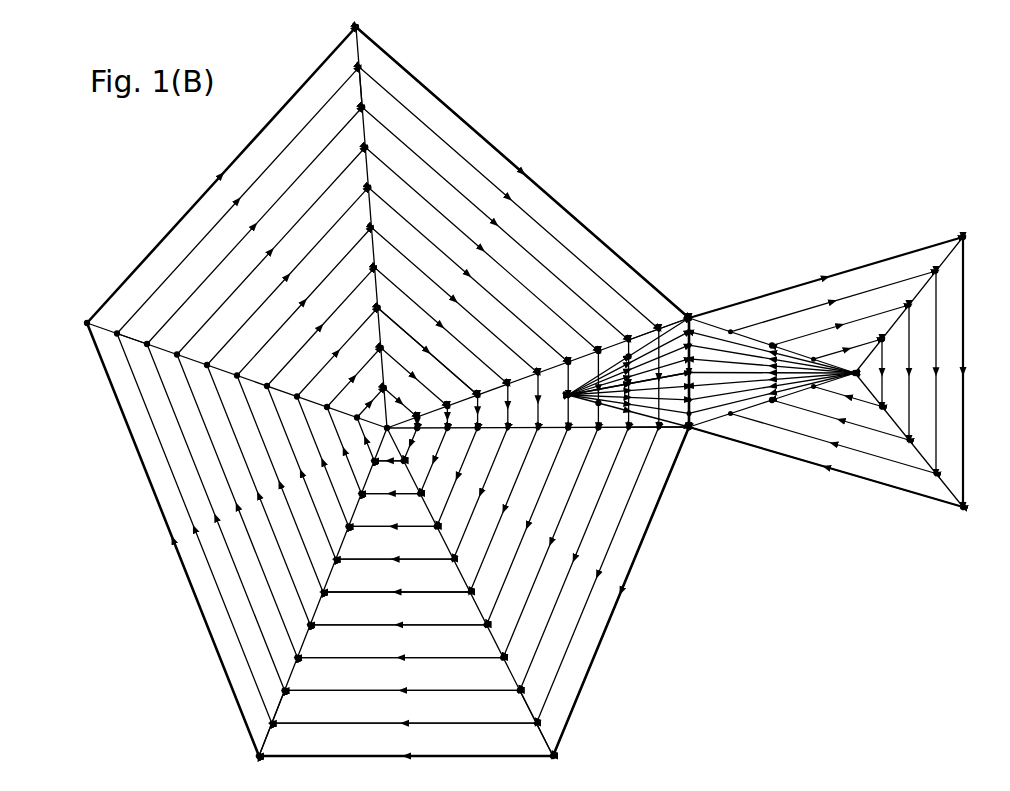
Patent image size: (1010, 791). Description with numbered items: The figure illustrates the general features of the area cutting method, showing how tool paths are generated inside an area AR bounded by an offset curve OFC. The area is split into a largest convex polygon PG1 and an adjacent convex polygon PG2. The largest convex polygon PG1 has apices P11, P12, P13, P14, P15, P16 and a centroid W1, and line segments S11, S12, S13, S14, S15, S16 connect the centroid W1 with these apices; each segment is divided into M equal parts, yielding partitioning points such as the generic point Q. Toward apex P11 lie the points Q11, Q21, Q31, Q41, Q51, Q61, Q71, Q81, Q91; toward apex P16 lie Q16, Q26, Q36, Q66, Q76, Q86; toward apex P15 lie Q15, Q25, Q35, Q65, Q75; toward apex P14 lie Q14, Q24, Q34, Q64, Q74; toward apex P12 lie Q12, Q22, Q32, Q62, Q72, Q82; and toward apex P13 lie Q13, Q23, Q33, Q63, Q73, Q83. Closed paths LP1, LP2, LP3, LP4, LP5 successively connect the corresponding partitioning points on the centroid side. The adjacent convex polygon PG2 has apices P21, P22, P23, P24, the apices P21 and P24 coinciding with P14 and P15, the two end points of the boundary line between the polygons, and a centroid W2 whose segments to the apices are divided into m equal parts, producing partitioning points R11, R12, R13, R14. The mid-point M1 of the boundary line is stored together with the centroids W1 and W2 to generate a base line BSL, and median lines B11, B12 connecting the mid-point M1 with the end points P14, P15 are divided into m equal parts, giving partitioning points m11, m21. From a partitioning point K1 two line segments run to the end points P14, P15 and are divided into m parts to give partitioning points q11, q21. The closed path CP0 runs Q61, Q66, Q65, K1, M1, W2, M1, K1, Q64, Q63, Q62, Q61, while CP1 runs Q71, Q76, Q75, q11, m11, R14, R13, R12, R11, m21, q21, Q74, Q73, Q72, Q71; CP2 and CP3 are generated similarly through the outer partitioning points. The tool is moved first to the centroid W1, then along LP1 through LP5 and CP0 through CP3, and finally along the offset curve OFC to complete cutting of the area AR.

The apex of largest convex polygon P11 is at (73, 326).
The apex of largest convex polygon P12 is at (239, 753).
The apex of largest convex polygon P13 is at (572, 753).
The apex of largest convex polygon P14 is at (699, 444).
The apex of largest convex polygon P15 is at (692, 294).
The apex of largest convex polygon P16 is at (368, 18).
The apex of adjacent convex polygon P21 is at (696, 452).
The apex of adjacent convex polygon P22 is at (977, 516).
The apex of adjacent convex polygon P23 is at (977, 239).
The apex of adjacent convex polygon P24 is at (695, 304).
The nested polygon edge Q is at (428, 351).
The partitioning point Q11 is at (355, 407).
The partitioning point Q21 is at (325, 397).
The partitioning point Q31 is at (288, 386).
The partitioning point Q41 is at (261, 374).
The partitioning point Q51 is at (235, 363).
The partitioning point Q61 is at (206, 352).
The partitioning point Q71 is at (176, 342).
The partitioning point Q81 is at (145, 331).
The partitioning point Q91 is at (115, 321).
The partitioning point Q16 is at (372, 382).
The partitioning point Q26 is at (395, 347).
The partitioning point Q36 is at (393, 301).
The partitioning point Q66 is at (382, 189).
The partitioning point Q76 is at (380, 146).
The partitioning point Q86 is at (376, 106).
The partitioning point Q15 is at (423, 407).
The partitioning point Q25 is at (450, 397).
The partitioning point Q35 is at (483, 386).
The partitioning point Q65 is at (570, 352).
The partitioning point Q75 is at (603, 342).
The partitioning point Q14 is at (429, 440).
The partitioning point Q24 is at (458, 441).
The partitioning point Q34 is at (488, 441).
The partitioning point Q64 is at (571, 445).
The partitioning point Q74 is at (605, 445).
The partitioning point Q12 is at (362, 466).
The partitioning point Q22 is at (350, 493).
The partitioning point Q32 is at (338, 531).
The partitioning point Q62 is at (310, 606).
The partitioning point Q72 is at (309, 671).
The partitioning point Q82 is at (296, 703).
The partitioning point Q13 is at (417, 467).
The partitioning point Q23 is at (410, 505).
The partitioning point Q33 is at (425, 540).
The partitioning point Q63 is at (474, 637).
The partitioning point Q73 is at (489, 671).
The partitioning point Q83 is at (506, 703).
The partitioning point q11 is at (616, 358).
The partitioning point q21 is at (587, 415).
The partitioning point K1 is at (578, 383).
The line segment S11 is at (140, 345).
The line segment S12 is at (272, 737).
The line segment S13 is at (542, 726).
The line segment S14 is at (635, 428).
The line segment S15 is at (648, 335).
The line segment S16 is at (362, 76).
The centroid W1 is at (388, 428).
The centroid W2 is at (856, 374).
The closed path LP1 is at (398, 461).
The closed path LP2 is at (380, 494).
The closed path LP3 is at (370, 527).
The closed path LP4 is at (366, 560).
The closed path LP5 is at (365, 593).
The closed path CP0 is at (372, 626).
The closed path CP1 is at (368, 659).
The closed path CP2 is at (382, 692).
The closed path CP3 is at (381, 725).
The area AR is at (539, 154).
The offset curve OFC is at (553, 198).
The largest convex polygon PG1 is at (613, 607).
The convex polygon PG2 is at (883, 483).
The median line B11 is at (704, 321).
The median line B12 is at (700, 425).
The partitioning point m11 is at (728, 336).
The partitioning point m21 is at (716, 388).
The mid-point M1 is at (700, 377).
The base line BSL is at (783, 376).
The partitioning point R11 is at (799, 405).
The partitioning point R12 is at (894, 397).
The partitioning point R13 is at (894, 349).
The partitioning point R14 is at (799, 349).